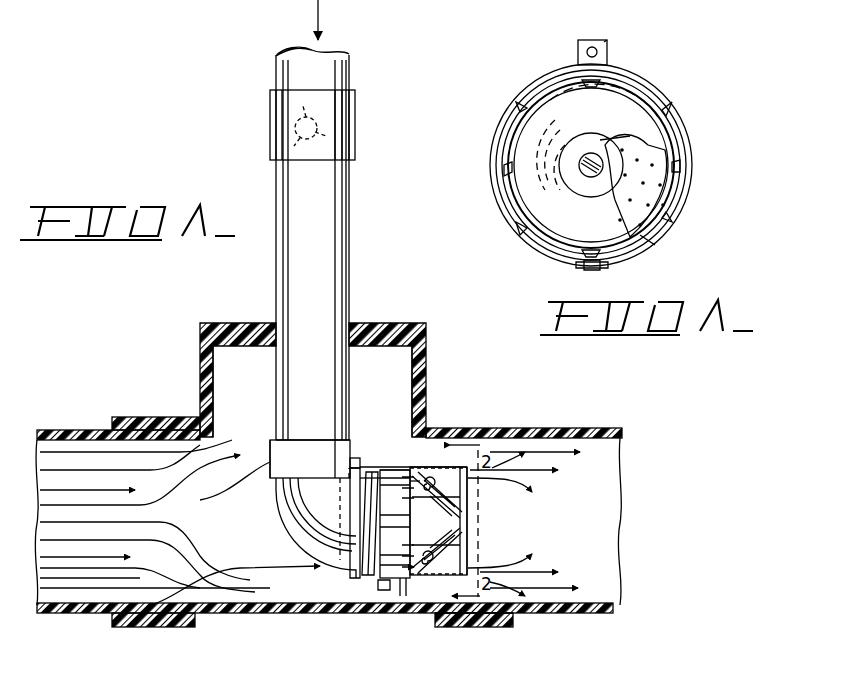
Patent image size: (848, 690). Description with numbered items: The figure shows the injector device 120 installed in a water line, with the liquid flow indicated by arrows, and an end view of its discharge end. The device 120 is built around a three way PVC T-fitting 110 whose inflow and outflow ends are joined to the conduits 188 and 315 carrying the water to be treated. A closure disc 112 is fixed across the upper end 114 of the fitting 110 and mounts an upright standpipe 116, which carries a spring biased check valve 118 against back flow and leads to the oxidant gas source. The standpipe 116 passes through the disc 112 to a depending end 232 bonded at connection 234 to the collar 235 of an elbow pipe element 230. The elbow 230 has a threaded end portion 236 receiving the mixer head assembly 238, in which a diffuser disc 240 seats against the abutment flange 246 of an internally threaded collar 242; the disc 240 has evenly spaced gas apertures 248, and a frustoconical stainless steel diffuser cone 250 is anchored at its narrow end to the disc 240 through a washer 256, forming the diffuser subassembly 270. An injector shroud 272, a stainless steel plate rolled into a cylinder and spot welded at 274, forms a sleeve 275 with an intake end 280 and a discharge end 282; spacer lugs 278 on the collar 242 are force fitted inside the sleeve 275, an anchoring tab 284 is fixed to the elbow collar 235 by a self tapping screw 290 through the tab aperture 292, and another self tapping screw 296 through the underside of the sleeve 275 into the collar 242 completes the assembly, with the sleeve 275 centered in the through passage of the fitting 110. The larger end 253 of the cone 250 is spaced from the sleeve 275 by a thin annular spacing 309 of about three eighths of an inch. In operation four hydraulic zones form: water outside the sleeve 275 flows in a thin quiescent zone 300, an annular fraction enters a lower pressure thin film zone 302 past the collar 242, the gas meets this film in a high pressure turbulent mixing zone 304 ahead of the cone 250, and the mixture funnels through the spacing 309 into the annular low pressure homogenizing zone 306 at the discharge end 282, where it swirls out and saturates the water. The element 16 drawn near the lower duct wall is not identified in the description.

In FIG. 1, the duct 16 is at (340, 620).
In FIG. 1, the T-fitting 110 is at (426, 360).
In FIG. 1, the closure disc 112 is at (392, 323).
In FIG. 1, the upper end 114 is at (200, 348).
In FIG. 1, the standpipe 116 is at (340, 245).
In FIG. 1, the check valve 118 is at (352, 122).
In FIG. 1, the injector device 120 is at (300, 578).
In FIG. 1, the conduit 188 is at (78, 430).
In FIG. 1, the elbow pipe element 230 is at (312, 514).
In FIG. 1, the depending end 232 is at (340, 470).
In FIG. 1, the connection 234 is at (303, 452).
In FIG. 1, the elbow collar 235 is at (298, 467).
In FIG. 1, the threaded end portion 236 is at (374, 590).
In FIG. 1, the mixer head assembly 238 is at (404, 590).
In FIG. 2, the mixer head assembly 238 is at (680, 80).
In FIG. 2, the diffuser disc 240 is at (656, 184).
In FIG. 2, the collar 242 is at (672, 210).
In FIG. 2, the abutment flange 246 is at (665, 158).
In FIG. 2, the apertures 248 is at (620, 205).
In FIG. 2, the diffuser cone 250 is at (648, 122).
In FIG. 1, the larger end 253 is at (466, 518).
In FIG. 2, the washer 256 is at (600, 150).
In FIG. 1, the diffuser subassembly 270 is at (420, 474).
In FIG. 2, the injector shroud 272 is at (500, 128).
In FIG. 2, the spot weld 274 is at (600, 266).
In FIG. 2, the cylindrical sleeve 275 is at (512, 222).
In FIG. 2, the spacer lugs 278 is at (653, 96).
In FIG. 1, the intake end 280 is at (335, 580).
In FIG. 1, the discharge end 282 is at (470, 546).
In FIG. 2, the sleeve anchoring tab 284 is at (578, 46).
In FIG. 1, the self tapping screw 290 is at (364, 473).
In FIG. 2, the tab aperture 292 is at (606, 42).
In FIG. 1, the self tapping screw 296 is at (394, 580).
In FIG. 1, the quiescent zone 300 is at (474, 608).
In FIG. 1, the quiescent zone 302 is at (384, 592).
In FIG. 1, the turbulent mixing zone 304 is at (410, 470).
In FIG. 1, the homogenizing liquid gas mix zone 306 is at (505, 456).
In FIG. 1, the annular spacing 309 is at (438, 486).
In FIG. 2, the annular spacing 309 is at (502, 176).
In FIG. 1, the conduit 315 is at (600, 428).